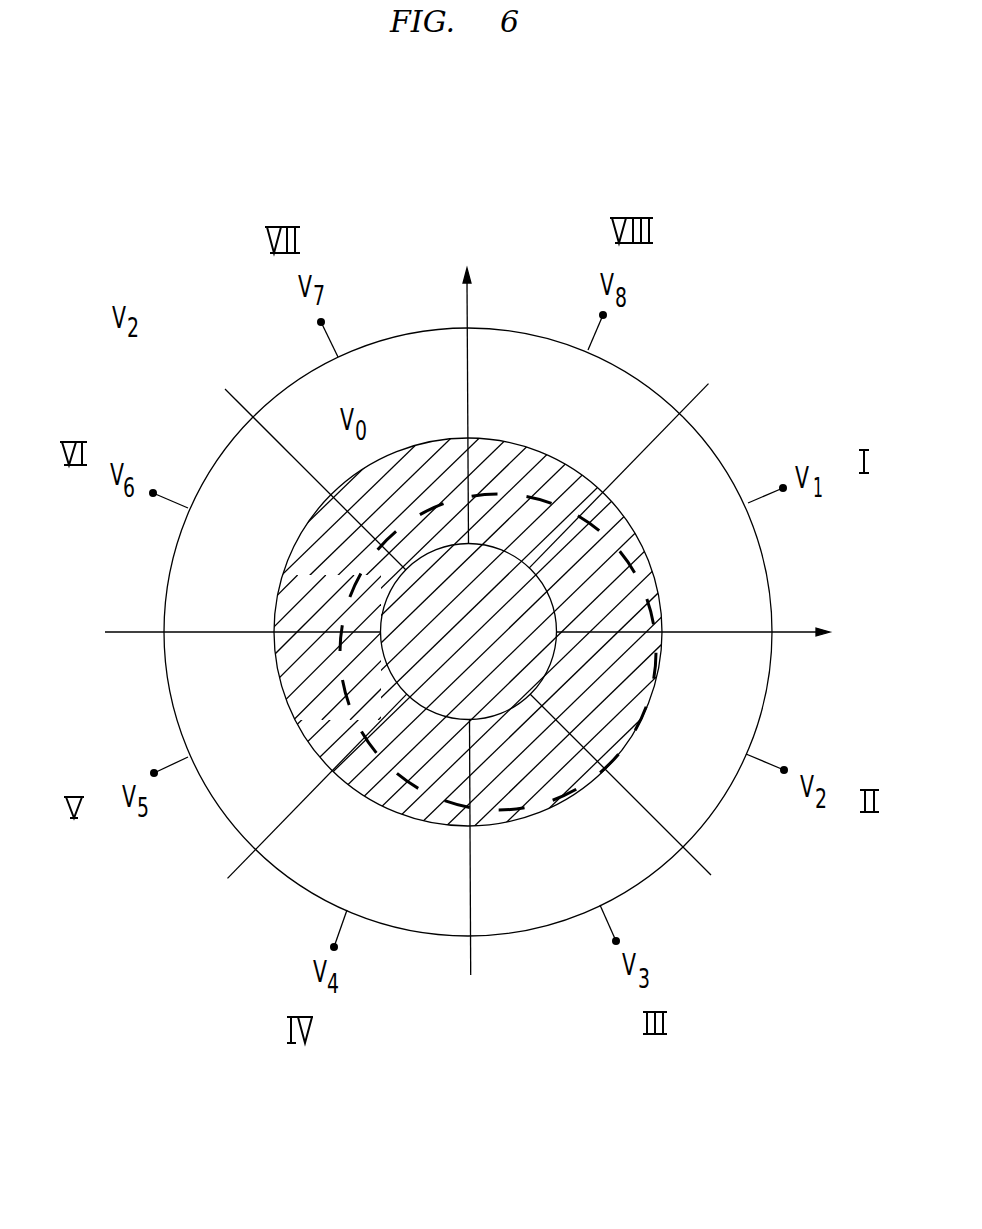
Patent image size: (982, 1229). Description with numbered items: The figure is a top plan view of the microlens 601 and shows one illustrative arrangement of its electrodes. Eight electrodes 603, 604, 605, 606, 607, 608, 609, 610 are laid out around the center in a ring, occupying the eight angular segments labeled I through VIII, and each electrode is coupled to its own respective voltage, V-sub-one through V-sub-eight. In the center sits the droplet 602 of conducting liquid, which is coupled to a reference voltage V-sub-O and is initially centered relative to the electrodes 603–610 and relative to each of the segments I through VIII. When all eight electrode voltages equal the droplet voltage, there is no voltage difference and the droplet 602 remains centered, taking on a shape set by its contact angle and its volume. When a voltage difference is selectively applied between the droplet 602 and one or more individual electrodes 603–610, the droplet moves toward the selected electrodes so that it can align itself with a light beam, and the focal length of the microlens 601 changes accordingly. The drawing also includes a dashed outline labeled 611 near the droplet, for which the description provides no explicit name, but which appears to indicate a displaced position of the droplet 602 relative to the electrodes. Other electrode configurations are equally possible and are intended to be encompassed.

The microlens 601 is at (124, 186).
The droplet 602 is at (563, 455).
The electrode 603 is at (770, 578).
The electrode 604 is at (773, 675).
The electrode 605 is at (640, 883).
The electrode 606 is at (305, 890).
The electrode 607 is at (186, 800).
The electrode 608 is at (213, 458).
The electrode 609 is at (383, 338).
The electrode 610 is at (638, 377).
The dashed circle 611 is at (638, 706).